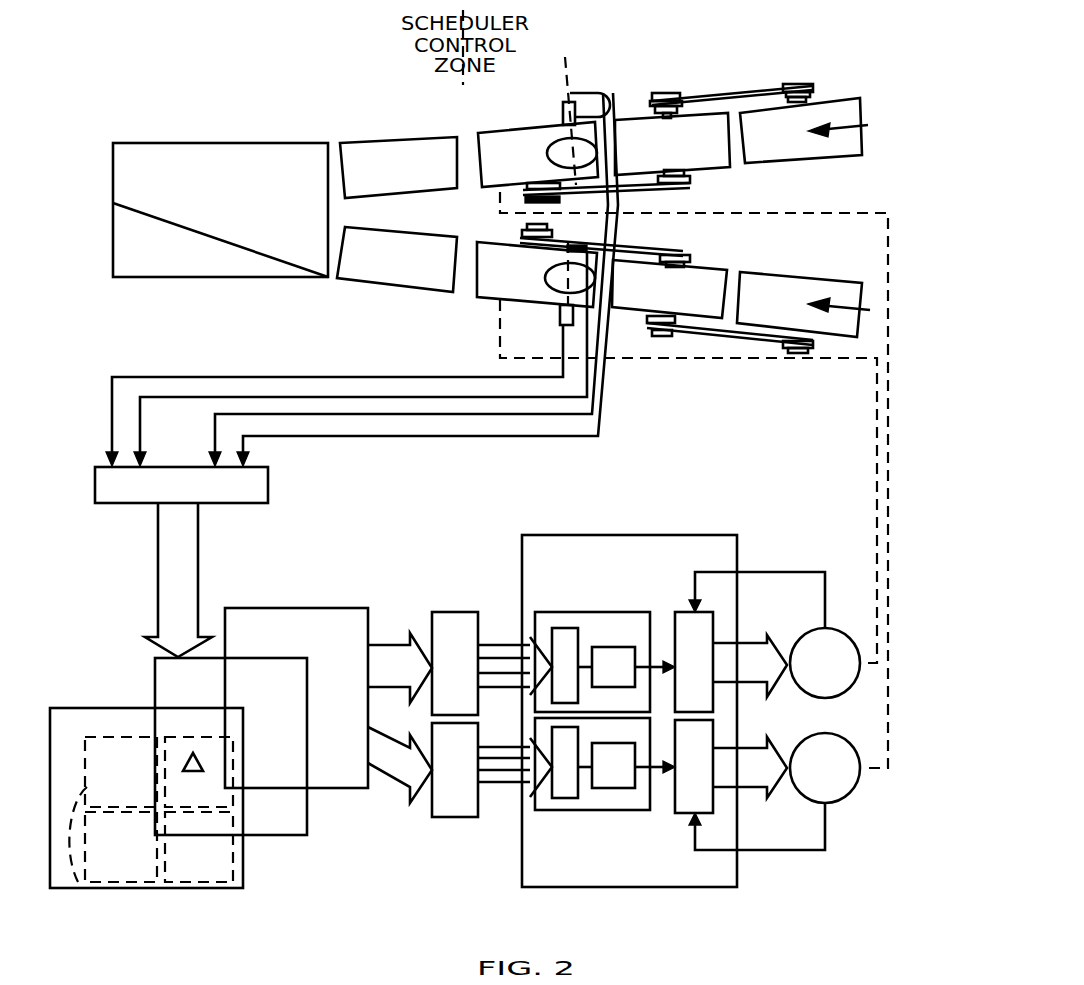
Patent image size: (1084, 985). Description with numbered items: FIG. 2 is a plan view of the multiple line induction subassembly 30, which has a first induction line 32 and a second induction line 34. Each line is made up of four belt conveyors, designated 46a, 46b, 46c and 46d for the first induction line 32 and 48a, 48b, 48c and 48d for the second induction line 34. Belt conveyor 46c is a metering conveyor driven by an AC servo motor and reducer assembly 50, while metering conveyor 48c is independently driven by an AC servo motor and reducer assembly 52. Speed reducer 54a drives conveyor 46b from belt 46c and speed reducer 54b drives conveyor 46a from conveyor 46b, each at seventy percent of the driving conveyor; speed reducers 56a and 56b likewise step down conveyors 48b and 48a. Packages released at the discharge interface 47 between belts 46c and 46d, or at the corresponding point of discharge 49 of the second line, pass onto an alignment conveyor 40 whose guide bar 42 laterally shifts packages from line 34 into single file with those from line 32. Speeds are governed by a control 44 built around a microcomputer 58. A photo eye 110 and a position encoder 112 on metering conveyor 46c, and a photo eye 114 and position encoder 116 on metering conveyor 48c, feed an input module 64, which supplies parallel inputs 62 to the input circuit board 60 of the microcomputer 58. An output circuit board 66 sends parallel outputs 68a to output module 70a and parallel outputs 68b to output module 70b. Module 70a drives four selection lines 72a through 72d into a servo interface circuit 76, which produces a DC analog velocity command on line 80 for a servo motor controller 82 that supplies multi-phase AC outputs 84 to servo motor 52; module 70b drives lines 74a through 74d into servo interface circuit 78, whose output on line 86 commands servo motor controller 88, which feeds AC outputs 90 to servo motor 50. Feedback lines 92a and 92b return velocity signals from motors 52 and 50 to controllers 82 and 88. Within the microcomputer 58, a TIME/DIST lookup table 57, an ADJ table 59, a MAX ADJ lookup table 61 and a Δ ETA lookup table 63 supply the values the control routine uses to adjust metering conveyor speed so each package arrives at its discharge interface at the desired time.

The multiple line induction subassembly 30 is at (723, 48).
The first induction line 32 is at (682, 84).
The second induction line 34 is at (688, 337).
The alignment conveyor 40 is at (243, 143).
The guide bar 42 is at (220, 242).
The control 44 is at (452, 892).
The belt conveyor 46a is at (833, 157).
The belt conveyor 46b is at (713, 167).
The metering conveyor 46c is at (563, 109).
The belt conveyor 46d is at (367, 143).
The discharge interface 47 is at (464, 136).
The belt conveyor 48a is at (808, 277).
The belt conveyor 48b is at (707, 267).
The metering conveyor 48c is at (495, 300).
The belt conveyor 48d is at (415, 290).
The point of discharge 49 is at (463, 292).
The AC servo motor and reducer assembly 50 is at (837, 803).
The AC servo motor and reducer assembly 52 is at (822, 699).
The speed reducer 54a is at (650, 192).
The speed reducer 54b is at (755, 92).
The speed reducer 56a is at (645, 242).
The speed reducer 56b is at (736, 345).
The lookup table 57 is at (80, 886).
The microcomputer 58 is at (226, 889).
The ADJ table 59 is at (123, 885).
The input circuit board 60 is at (275, 838).
The lookup table 61 is at (183, 888).
The parallel inputs 62 is at (198, 577).
The lookup table 63 is at (233, 797).
The input module 64 is at (268, 487).
The output circuit board 66 is at (327, 790).
The parallel outputs 68a is at (386, 640).
The parallel outputs 68b is at (393, 784).
The output module 70a is at (465, 612).
The output module 70b is at (460, 818).
The parallel line 72a is at (497, 645).
The parallel line 72d is at (500, 688).
The line 74a is at (503, 747).
The line 74d is at (495, 783).
The servo interface circuit 76 is at (573, 610).
The servo interface circuit 78 is at (563, 812).
The line 80 is at (662, 660).
The servo motor controller 82 is at (716, 623).
The multi-phase AC outputs 84 is at (743, 683).
The line 86 is at (662, 777).
The servo motor controller 88 is at (713, 813).
The multi-phase AC outputs 90 is at (752, 793).
The feedback line 92a is at (753, 572).
The feedback line 92b is at (760, 852).
The photo eye 110 is at (608, 115).
The position encoder 112 is at (548, 153).
The photo eye 114 is at (558, 312).
The position encoder 116 is at (545, 278).